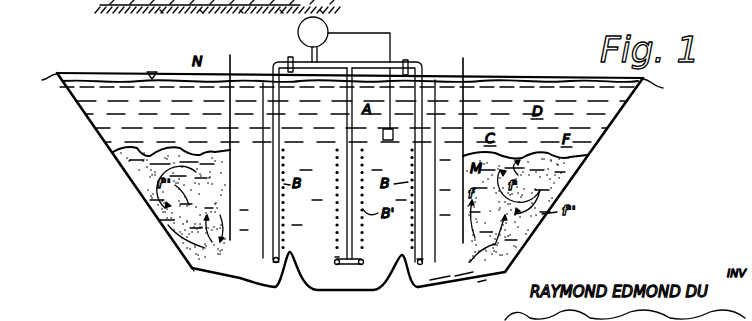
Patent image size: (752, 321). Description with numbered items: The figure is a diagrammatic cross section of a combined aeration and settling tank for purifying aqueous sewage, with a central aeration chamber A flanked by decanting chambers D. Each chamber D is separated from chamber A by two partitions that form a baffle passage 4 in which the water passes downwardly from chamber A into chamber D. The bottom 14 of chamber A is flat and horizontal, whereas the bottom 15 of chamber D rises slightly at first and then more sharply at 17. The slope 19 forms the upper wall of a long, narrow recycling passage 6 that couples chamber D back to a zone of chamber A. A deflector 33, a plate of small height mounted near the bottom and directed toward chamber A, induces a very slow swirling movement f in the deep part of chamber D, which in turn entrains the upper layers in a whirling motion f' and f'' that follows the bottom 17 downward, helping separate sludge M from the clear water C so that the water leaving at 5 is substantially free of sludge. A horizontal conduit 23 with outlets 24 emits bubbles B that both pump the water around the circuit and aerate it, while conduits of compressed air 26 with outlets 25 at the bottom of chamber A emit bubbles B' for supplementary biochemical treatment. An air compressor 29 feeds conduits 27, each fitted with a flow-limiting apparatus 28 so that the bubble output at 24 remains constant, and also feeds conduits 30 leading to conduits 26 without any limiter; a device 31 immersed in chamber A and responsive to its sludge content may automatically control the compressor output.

The baffle passage 4 is at (240, 188).
The water outlet 5 is at (352, 172).
The recycling passage 6 is at (218, 279).
The bottom of chamber A 14 is at (353, 284).
The bottom of chamber D 15 is at (489, 280).
The rising bottom portion 17 is at (140, 201).
The slope 19 is at (193, 270).
The horizontal conduit 23 is at (276, 265).
The outlets 24 is at (417, 258).
The outlets 25 is at (333, 257).
The conduits of compressed air 26 is at (335, 265).
The conduits 27 is at (279, 113).
The flow-limiting apparatus 28 is at (406, 60).
The air compressor 29 is at (323, 24).
The conduits 30 is at (345, 129).
The control device 31 is at (383, 140).
The deflector 33 is at (180, 237).